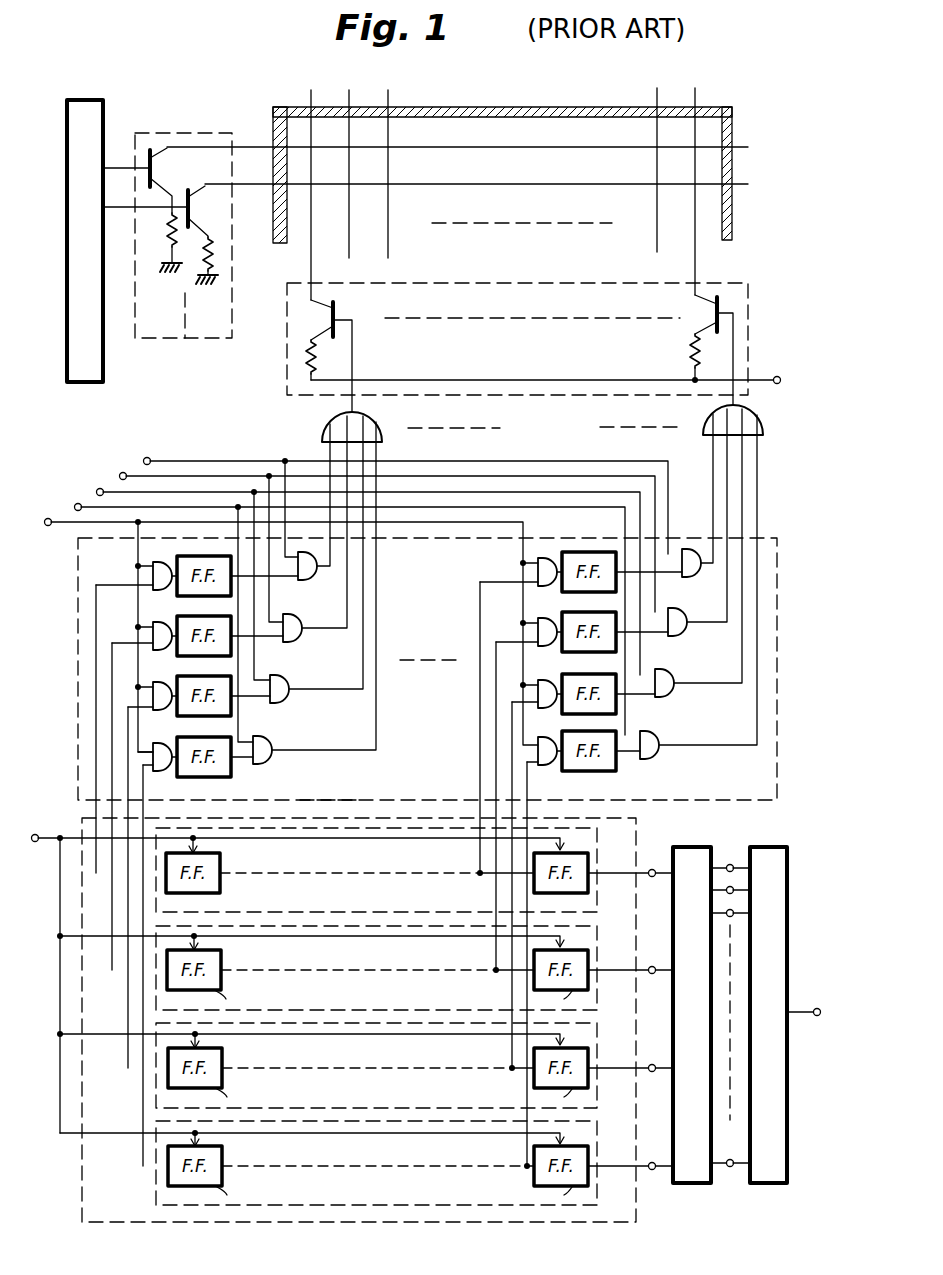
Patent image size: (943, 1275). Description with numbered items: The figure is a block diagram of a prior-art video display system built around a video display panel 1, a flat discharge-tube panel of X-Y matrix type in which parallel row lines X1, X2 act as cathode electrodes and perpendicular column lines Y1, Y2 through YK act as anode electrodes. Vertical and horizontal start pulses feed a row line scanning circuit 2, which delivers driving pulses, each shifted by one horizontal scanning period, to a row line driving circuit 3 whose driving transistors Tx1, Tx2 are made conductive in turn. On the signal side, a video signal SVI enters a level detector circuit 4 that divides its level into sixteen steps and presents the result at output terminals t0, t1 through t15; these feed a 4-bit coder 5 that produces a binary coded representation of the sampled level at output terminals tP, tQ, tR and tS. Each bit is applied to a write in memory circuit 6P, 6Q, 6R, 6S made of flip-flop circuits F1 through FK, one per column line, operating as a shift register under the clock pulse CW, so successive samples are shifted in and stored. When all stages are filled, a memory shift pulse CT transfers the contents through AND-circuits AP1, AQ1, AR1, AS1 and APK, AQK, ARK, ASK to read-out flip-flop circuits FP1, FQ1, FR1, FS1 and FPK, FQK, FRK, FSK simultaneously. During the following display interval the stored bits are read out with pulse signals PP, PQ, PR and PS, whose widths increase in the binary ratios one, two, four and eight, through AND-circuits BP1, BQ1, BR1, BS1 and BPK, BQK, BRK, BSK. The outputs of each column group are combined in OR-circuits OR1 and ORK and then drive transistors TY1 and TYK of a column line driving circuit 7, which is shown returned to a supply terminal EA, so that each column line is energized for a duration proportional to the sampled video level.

The video display panel 1 is at (476, 182).
The row line scanning circuit 2 is at (75, 382).
The row line driving circuit 3 is at (184, 258).
The level detector circuit 4 is at (789, 1038).
The 4-bit coder 5 is at (716, 1024).
The write in memory circuit 6P is at (414, 870).
The write in memory circuit 6Q is at (414, 968).
The write in memory circuit 6R is at (414, 1065).
The write in memory circuit 6S is at (414, 1163).
The column line driving circuit 7 is at (542, 347).
The driving transistor Tx1 is at (156, 168).
The driving transistor Tx2 is at (194, 210).
The driving transistor TY1 is at (338, 312).
The driving transistor TYK is at (722, 305).
The row line X1 is at (744, 150).
The row line X2 is at (744, 187).
The column line Y1 is at (314, 246).
The column line Y2 is at (352, 246).
The column line YK is at (698, 250).
The OR-circuit OR1 is at (322, 420).
The OR-circuit ORK is at (703, 412).
The supply voltage terminal EA is at (570, 381).
The pulse signal PP is at (145, 460).
The pulse signal PQ is at (121, 475).
The pulse signal PR is at (98, 491).
The pulse signal PS is at (76, 506).
The memory shift pulse CT is at (48, 526).
The clock pulse CW is at (41, 818).
The AND-circuit AP1 is at (147, 557).
The AND-circuit AQ1 is at (147, 618).
The AND-circuit AR1 is at (160, 714).
The AND-circuit AS1 is at (165, 773).
The flip-flop circuit FP1 is at (170, 598).
The flip-flop circuit FQ1 is at (172, 658).
The flip-flop circuit FR1 is at (232, 712).
The flip-flop circuit FS1 is at (232, 777).
The AND-circuit BP1 is at (312, 578).
The AND-circuit BQ1 is at (297, 640).
The AND-circuit BR1 is at (284, 702).
The AND-circuit BS1 is at (270, 764).
The AND-circuit APK is at (538, 582).
The AND-circuit AQK is at (548, 648).
The AND-circuit ARK is at (548, 710).
The AND-circuit ASK is at (548, 768).
The flip-flop circuit FPK is at (570, 595).
The flip-flop circuit FQK is at (617, 645).
The flip-flop circuit FRK is at (617, 706).
The flip-flop circuit FSK is at (617, 765).
The AND-circuit BPK is at (696, 576).
The AND-circuit BQK is at (682, 636).
The AND-circuit BRK is at (669, 697).
The AND-circuit BSK is at (655, 758).
The flip-flop circuit F1 is at (215, 894).
The flip-flop circuit FK is at (572, 894).
The output terminal tP is at (652, 878).
The output terminal tQ is at (652, 975).
The output terminal tR is at (652, 1073).
The output terminal tS is at (652, 1171).
The output terminal t0 is at (726, 864).
The output terminal t1 is at (733, 884).
The output terminal t15 is at (730, 1168).
The video signal SVI is at (814, 1018).